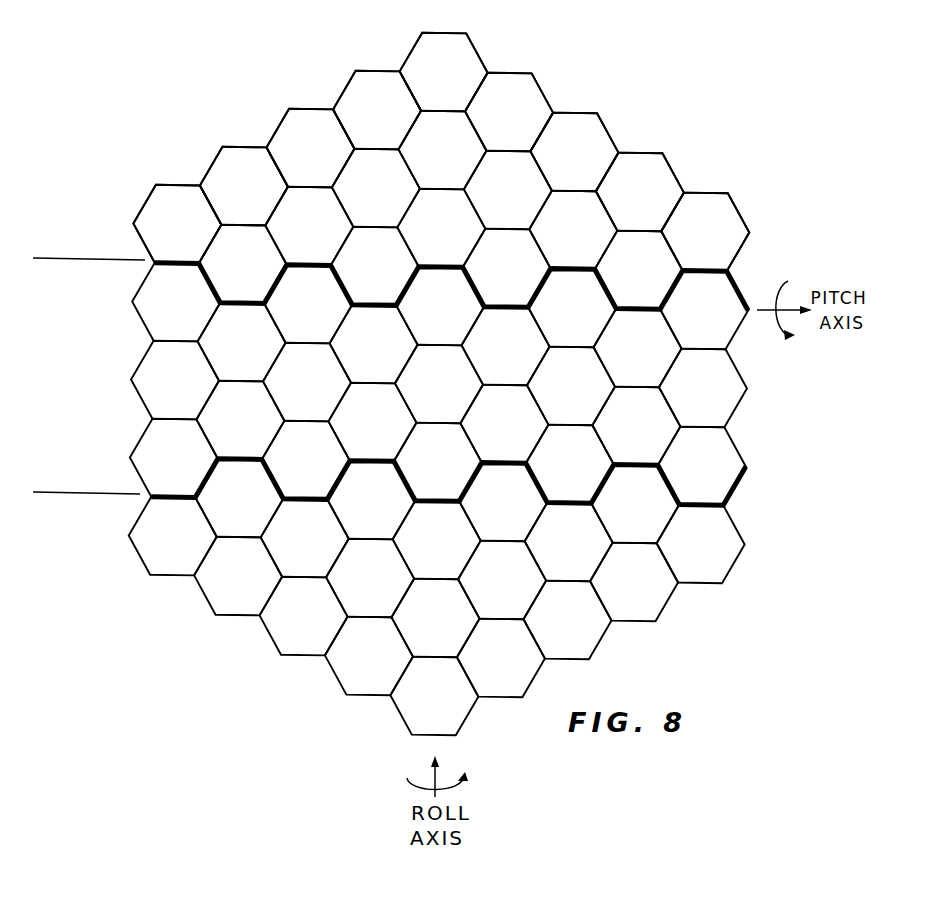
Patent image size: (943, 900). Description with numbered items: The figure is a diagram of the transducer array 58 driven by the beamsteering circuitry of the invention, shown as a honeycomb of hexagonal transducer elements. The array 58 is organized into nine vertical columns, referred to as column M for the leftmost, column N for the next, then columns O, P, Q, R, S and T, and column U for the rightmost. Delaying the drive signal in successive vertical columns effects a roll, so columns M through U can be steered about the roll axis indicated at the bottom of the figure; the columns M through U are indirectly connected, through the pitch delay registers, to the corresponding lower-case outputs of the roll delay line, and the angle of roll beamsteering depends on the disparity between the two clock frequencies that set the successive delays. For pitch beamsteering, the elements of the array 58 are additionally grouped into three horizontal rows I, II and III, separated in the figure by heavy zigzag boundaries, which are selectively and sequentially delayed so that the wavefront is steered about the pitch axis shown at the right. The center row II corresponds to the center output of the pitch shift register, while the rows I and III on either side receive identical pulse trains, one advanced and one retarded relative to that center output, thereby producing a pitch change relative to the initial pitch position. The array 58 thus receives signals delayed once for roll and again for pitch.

The transducer array 58 is at (252, 650).
The leftmost column M is at (177, 184).
The second column N is at (257, 146).
The third column O is at (325, 108).
The fourth column P is at (392, 70).
The center column Q is at (429, 33).
The sixth column R is at (490, 72).
The seventh column S is at (553, 112).
The eighth column T is at (619, 153).
The rightmost column U is at (690, 192).
The first horizontal row I is at (49, 241).
The second horizontal row II is at (51, 395).
The third horizontal row III is at (53, 548).